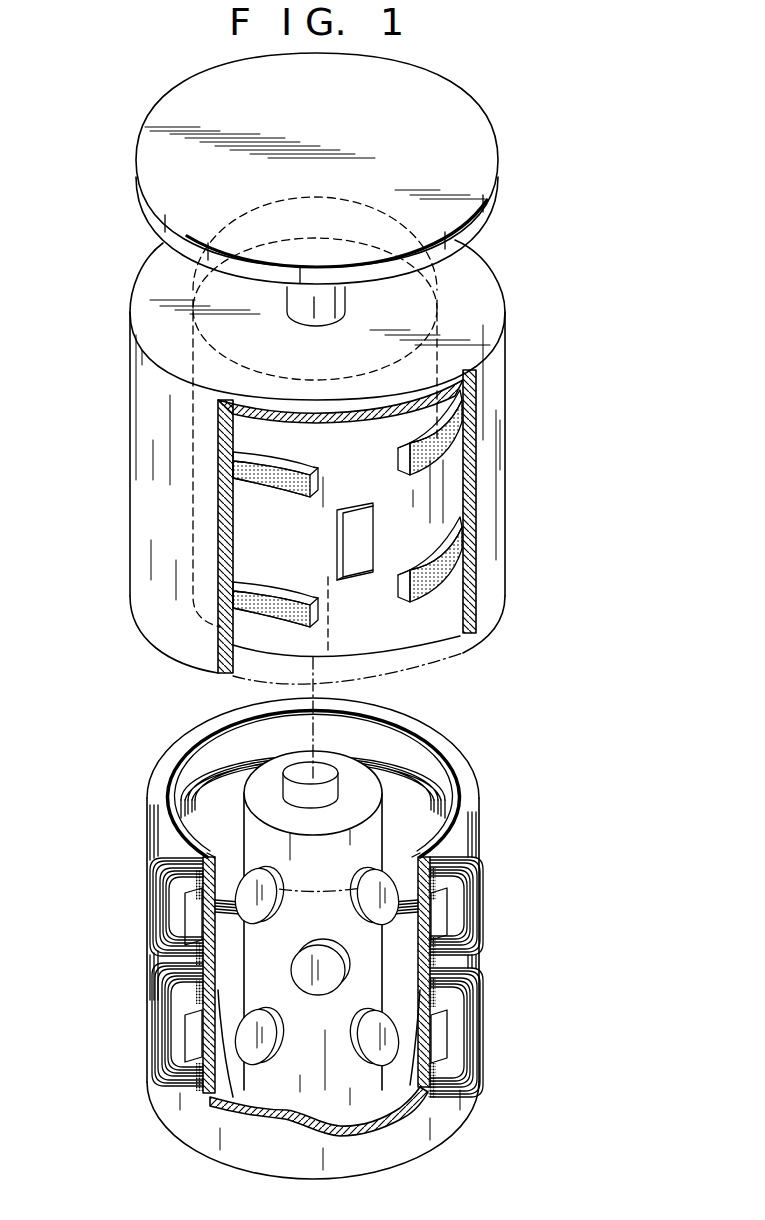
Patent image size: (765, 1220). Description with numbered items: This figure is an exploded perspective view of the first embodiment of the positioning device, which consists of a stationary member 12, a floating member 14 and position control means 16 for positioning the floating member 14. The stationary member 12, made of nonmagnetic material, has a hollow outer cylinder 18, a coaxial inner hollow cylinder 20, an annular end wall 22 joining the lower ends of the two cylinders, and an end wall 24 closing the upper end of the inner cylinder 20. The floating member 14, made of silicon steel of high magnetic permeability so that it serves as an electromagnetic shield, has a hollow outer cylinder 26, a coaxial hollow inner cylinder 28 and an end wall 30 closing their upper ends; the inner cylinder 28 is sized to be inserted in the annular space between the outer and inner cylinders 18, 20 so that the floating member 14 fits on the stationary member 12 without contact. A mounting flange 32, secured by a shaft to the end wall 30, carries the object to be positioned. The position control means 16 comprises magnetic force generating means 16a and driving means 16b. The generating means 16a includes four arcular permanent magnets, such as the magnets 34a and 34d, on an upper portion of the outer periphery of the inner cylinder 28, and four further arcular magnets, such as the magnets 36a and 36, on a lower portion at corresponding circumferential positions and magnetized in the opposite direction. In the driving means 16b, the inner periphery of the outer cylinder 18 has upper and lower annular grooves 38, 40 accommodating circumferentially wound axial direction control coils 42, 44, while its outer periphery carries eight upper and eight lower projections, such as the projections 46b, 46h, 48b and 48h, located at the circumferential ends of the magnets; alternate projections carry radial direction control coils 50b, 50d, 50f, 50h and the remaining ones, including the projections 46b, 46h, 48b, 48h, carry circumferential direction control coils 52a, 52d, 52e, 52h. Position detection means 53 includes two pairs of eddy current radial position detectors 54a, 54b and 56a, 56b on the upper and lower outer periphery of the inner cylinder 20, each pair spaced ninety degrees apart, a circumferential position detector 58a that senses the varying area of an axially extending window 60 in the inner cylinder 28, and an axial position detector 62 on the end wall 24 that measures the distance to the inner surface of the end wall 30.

The stationary member 12 is at (458, 768).
The floating member 14 is at (478, 283).
The position control means 16 is at (143, 826).
The magnetic force generating means 16a is at (250, 528).
The driving means 16b is at (486, 933).
The hollow outer cylinder 18 is at (442, 745).
The inner hollow cylinder 20 is at (252, 832).
The annular end wall 22 is at (390, 1112).
The end wall 24 is at (270, 772).
The hollow outer cylinder 26 is at (490, 493).
The hollow inner cylinder 28 is at (350, 637).
The end wall 30 is at (475, 338).
The mounting flange 32 is at (461, 118).
The arcular permanent magnet 34a is at (287, 496).
The arcular permanent magnet 34d is at (442, 436).
The arcular permanent magnet 36 is at (412, 603).
The arcular permanent magnet 36a is at (253, 620).
The upper annular groove 38 is at (243, 878).
The lower annular groove 40 is at (226, 1098).
The axial direction control coil 42 is at (245, 783).
The axial direction control coil 44 is at (232, 920).
The upper projection 46b is at (188, 918).
The upper projection 46h is at (445, 905).
The lower projection 48b is at (190, 1037).
The lower projection 48h is at (442, 1025).
The radial direction control coil 50b is at (147, 897).
The radial direction control coil 50d is at (480, 812).
The radial direction control coil 50f is at (157, 983).
The radial direction control coil 50h is at (472, 975).
The circumferential direction control coil 52a is at (197, 944).
The circumferential direction control coil 52d is at (462, 866).
The circumferential direction control coil 52e is at (181, 1075).
The circumferential direction control coil 52h is at (450, 1080).
The position detection means 53 is at (287, 1093).
The radial position detector 54a is at (282, 900).
The radial position detector 54b is at (394, 880).
The radial position detector 56a is at (262, 1012).
The radial position detector 56b is at (362, 1063).
The circumferential position detector 58a is at (318, 988).
The axially extending window 60 is at (352, 563).
The axial position detector 62 is at (327, 773).